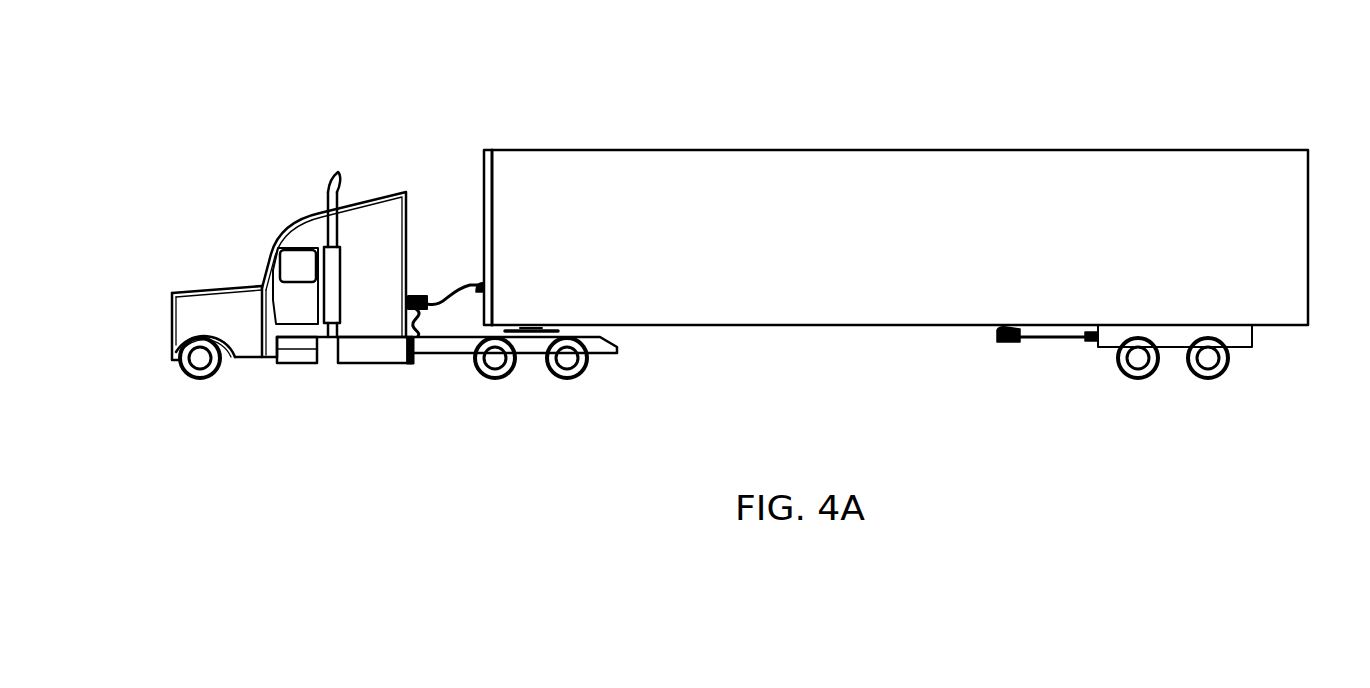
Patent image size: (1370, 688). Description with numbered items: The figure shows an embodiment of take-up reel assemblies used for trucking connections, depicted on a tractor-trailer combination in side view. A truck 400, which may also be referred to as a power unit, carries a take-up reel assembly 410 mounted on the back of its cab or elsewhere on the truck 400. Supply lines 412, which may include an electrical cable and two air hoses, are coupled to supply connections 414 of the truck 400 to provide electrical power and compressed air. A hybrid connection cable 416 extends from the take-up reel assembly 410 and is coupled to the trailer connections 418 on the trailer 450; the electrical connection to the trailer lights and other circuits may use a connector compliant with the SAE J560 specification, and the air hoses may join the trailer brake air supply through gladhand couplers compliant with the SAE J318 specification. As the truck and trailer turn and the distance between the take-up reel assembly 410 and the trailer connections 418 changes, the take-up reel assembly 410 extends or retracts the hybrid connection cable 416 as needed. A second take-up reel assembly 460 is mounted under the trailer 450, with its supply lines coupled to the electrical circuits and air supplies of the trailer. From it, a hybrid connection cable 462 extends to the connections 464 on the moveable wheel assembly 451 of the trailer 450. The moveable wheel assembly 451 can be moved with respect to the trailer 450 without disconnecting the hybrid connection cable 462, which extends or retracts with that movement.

The truck 400 is at (297, 200).
The take-up reel assembly 410 is at (417, 335).
The supply lines 412 is at (416, 338).
The supply connections 414 is at (410, 341).
The hybrid connection cable 416 is at (439, 310).
The trailer connections 418 is at (477, 281).
The trailer 450 is at (1031, 132).
The moveable wheel assembly 451 is at (1243, 363).
The take-up reel assembly 460 is at (1002, 344).
The hybrid connection cable 462 is at (1050, 340).
The connections 464 is at (1096, 344).